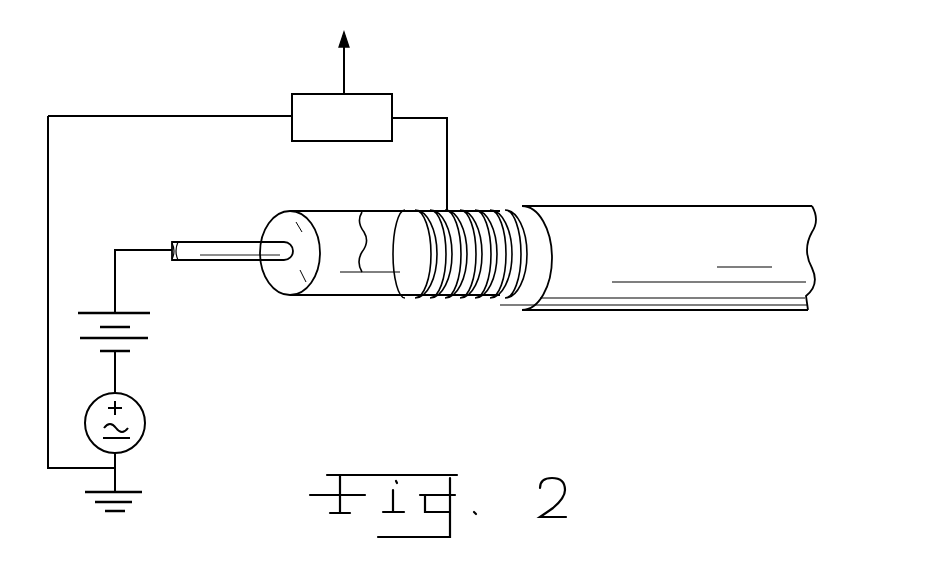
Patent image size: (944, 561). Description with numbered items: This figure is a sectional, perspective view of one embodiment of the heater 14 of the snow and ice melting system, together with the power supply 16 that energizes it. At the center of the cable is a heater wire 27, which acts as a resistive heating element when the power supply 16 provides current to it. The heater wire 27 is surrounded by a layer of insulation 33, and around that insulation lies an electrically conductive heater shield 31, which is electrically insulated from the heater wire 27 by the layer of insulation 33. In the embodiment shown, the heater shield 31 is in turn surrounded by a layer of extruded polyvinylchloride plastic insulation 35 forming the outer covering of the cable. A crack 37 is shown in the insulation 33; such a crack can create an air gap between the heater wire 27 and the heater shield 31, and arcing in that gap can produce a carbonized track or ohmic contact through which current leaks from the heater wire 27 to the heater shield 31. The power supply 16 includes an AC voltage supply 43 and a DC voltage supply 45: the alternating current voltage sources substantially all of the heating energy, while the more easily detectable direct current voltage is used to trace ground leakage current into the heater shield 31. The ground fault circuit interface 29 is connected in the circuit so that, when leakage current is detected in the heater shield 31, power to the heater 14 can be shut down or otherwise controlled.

The heater 14 is at (694, 158).
The power supply 16 is at (180, 395).
The heater wire 27 is at (228, 243).
The ground fault circuit interface 29 is at (366, 94).
The heater shield 31 is at (474, 300).
The layer of insulation 33 is at (338, 296).
The layer of extruded polyvinylchloride plastic insulation 35 is at (718, 300).
The crack 37 is at (362, 212).
The AC voltage supply 43 is at (143, 440).
The DC voltage supply 45 is at (140, 334).